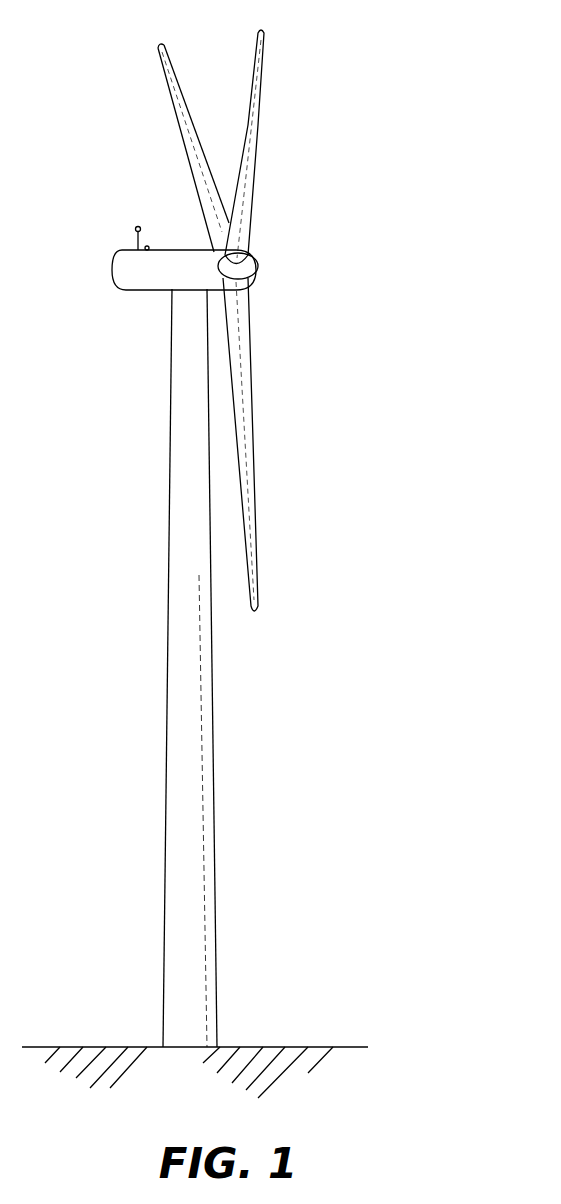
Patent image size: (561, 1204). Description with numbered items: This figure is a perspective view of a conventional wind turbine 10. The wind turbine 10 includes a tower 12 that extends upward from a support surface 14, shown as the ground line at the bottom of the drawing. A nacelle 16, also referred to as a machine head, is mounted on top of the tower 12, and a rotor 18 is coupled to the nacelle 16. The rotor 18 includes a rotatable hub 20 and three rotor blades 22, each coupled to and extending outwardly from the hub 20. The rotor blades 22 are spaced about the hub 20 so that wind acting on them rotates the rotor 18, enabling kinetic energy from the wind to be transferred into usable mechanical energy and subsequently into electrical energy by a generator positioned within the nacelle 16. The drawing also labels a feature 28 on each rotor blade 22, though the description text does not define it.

The wind turbine 10 is at (370, 98).
The tower 12 is at (172, 759).
The support surface 14 is at (97, 1045).
The nacelle 16 is at (151, 292).
The rotor 18 is at (240, 310).
The rotatable hub 20 is at (257, 270).
The rotor blade 22 is at (253, 68).
The blade surface 28 is at (200, 182).